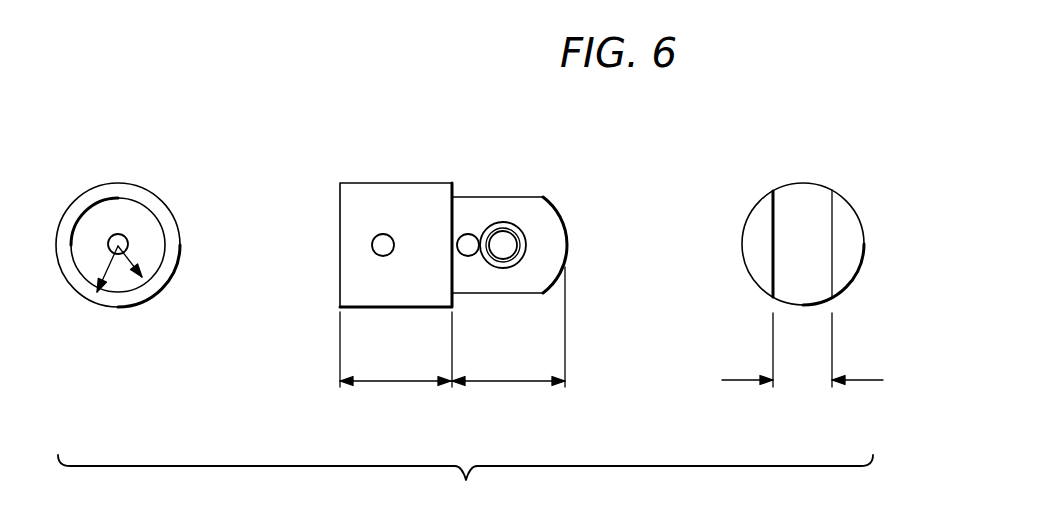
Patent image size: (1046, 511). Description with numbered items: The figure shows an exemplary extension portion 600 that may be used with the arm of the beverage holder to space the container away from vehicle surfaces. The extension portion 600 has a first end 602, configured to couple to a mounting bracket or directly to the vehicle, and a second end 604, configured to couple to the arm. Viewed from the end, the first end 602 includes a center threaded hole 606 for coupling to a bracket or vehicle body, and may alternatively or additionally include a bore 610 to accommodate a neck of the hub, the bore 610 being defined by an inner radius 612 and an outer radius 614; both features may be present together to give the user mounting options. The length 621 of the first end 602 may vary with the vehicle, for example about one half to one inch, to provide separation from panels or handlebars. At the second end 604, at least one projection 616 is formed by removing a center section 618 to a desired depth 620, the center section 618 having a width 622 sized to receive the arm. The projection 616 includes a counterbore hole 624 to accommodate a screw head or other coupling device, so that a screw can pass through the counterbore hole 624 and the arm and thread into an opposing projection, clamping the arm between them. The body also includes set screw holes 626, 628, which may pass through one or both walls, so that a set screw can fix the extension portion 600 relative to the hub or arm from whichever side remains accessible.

The extension portion 600 is at (278, 101).
The first end 602 is at (338, 240).
The second end 604 is at (567, 243).
The threaded hole 606 is at (122, 238).
The bore 610 is at (140, 225).
The inner radius 612 is at (126, 258).
The outer radius 614 is at (111, 270).
The projection 616 is at (562, 200).
The center section 618 is at (805, 198).
The depth 620 is at (507, 383).
The length 621 is at (397, 383).
The width 622 is at (802, 383).
The counterbore hole 624 is at (517, 228).
The set screw hole 626 is at (383, 233).
The set screw hole 628 is at (468, 234).